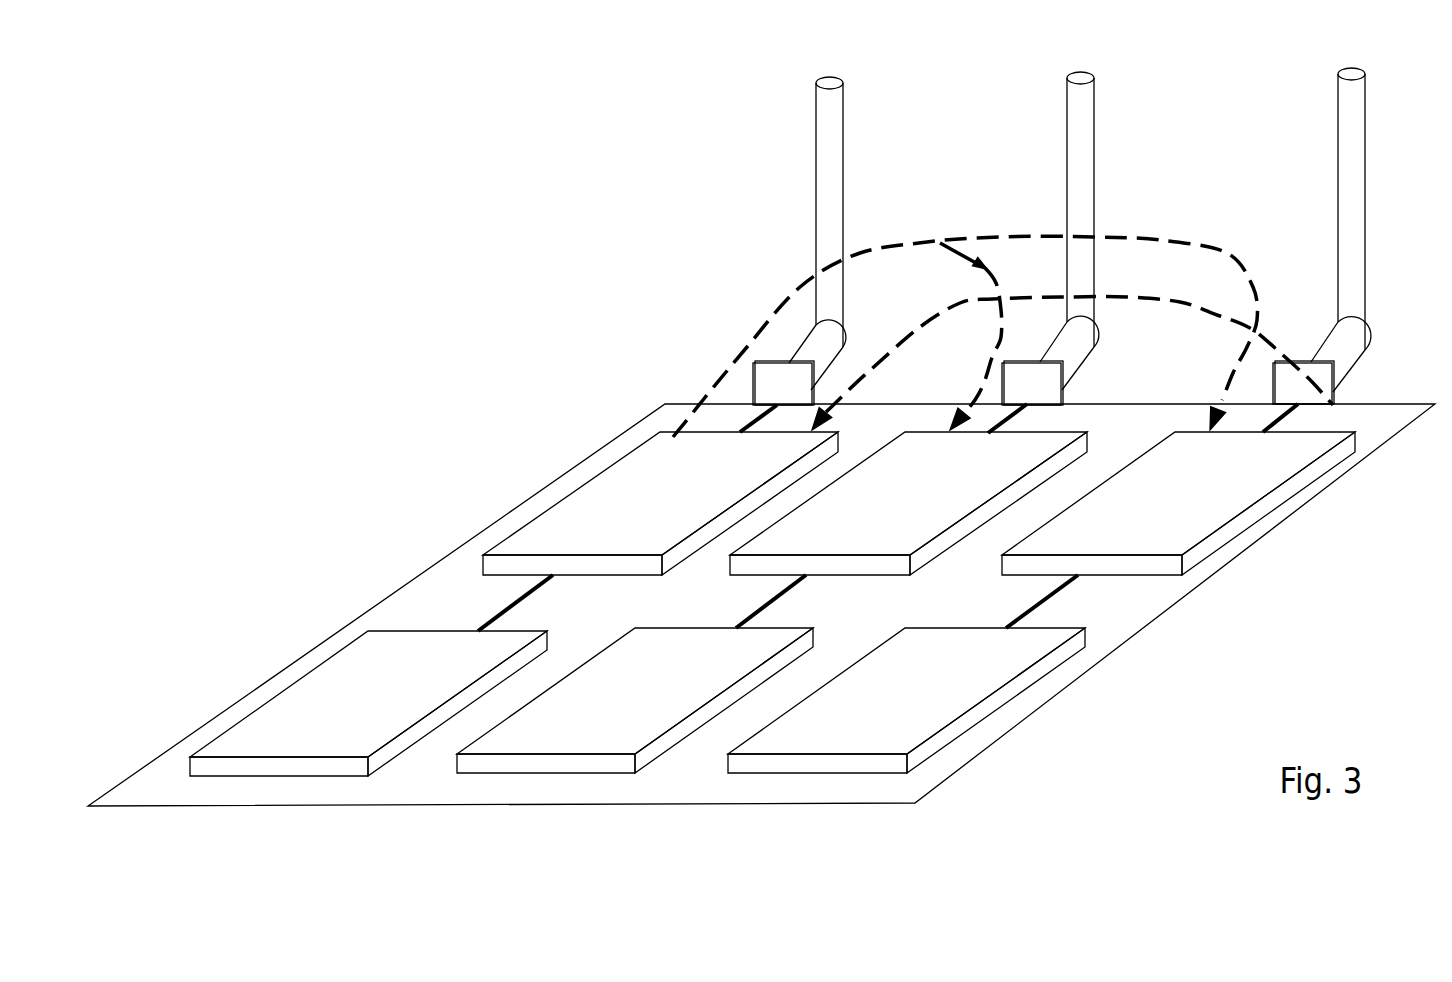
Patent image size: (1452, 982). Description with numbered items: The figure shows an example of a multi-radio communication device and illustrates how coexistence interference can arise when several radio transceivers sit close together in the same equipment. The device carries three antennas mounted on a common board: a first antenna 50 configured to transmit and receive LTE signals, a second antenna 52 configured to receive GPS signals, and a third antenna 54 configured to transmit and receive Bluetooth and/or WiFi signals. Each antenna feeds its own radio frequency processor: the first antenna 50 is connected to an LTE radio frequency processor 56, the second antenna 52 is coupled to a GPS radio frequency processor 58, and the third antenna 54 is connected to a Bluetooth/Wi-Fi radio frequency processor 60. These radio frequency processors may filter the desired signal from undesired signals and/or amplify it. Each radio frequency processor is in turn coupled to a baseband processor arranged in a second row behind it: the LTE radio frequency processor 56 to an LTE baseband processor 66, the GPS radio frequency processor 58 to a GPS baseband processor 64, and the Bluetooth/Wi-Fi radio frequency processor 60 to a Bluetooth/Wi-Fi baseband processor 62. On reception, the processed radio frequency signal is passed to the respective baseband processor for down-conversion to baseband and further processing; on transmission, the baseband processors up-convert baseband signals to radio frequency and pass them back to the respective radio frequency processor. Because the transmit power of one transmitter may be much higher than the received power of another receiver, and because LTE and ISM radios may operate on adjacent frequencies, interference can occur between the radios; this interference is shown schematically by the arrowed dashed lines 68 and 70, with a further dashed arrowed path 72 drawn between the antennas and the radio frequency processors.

The first antenna 50 is at (850, 93).
The second antenna 52 is at (1100, 112).
The third antenna 54 is at (1367, 110).
The LTE radio frequency processor 56 is at (590, 557).
The GPS radio frequency processor 58 is at (834, 557).
The Bluetooth/Wi-Fi radio frequency processor 60 is at (1094, 551).
The Bluetooth/Wi-Fi baseband processor 62 is at (1019, 677).
The GPS baseband processor 64 is at (739, 677).
The LTE baseband processor 66 is at (466, 682).
The arrowed dashed line 68 is at (1192, 307).
The arrowed dashed line 70 is at (1250, 265).
The RF coupling path 72 is at (997, 280).